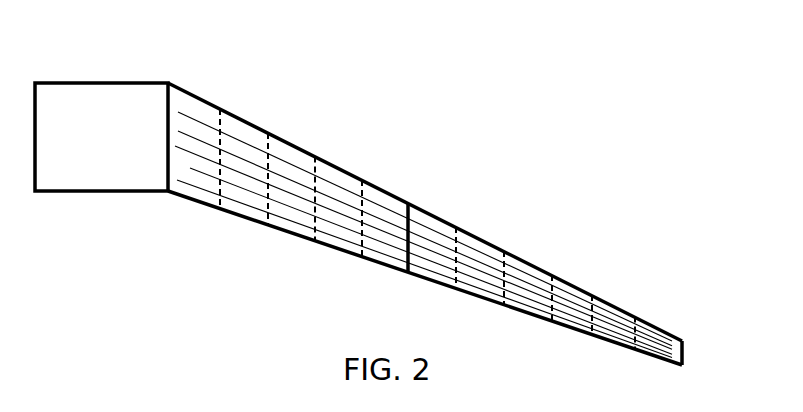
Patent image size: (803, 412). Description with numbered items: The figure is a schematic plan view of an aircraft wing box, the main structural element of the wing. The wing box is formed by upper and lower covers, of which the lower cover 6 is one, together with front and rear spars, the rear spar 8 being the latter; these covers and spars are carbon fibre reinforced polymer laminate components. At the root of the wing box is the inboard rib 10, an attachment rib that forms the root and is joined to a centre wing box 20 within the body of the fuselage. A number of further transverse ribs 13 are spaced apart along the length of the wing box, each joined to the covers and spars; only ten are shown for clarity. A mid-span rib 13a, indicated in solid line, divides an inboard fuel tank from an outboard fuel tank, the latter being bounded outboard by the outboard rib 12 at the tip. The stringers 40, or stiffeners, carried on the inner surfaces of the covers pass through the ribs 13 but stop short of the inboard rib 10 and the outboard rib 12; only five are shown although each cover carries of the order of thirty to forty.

The inboard rib 10 is at (165, 143).
The centre wing box 20 is at (118, 112).
The lower cover 6 is at (325, 160).
The rear spar 8 is at (340, 250).
The outboard rib 12 is at (687, 350).
The transverse ribs 13 is at (213, 137).
The mid-span rib 13a is at (410, 230).
The stringers 40 is at (237, 130).